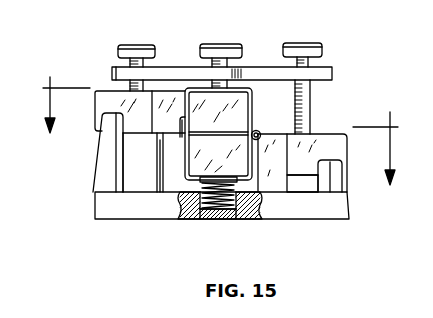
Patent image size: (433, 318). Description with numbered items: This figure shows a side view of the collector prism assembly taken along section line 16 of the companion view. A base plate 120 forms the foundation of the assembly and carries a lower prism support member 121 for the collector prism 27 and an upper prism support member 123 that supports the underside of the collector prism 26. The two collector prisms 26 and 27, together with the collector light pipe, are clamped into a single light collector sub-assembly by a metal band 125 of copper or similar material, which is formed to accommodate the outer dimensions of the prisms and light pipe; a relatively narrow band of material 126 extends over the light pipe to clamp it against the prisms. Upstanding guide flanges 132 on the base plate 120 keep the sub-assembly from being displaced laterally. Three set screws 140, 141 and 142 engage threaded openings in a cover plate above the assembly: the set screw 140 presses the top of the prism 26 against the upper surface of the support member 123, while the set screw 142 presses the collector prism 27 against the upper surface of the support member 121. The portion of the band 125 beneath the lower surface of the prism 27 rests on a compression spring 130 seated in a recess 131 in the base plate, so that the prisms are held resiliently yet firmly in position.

The section line 16- 16 is at (211, 147).
The collector prism 26 is at (100, 90).
The collector prism 27 is at (325, 134).
The base plate 120 is at (97, 207).
The lower prism support member 121 is at (290, 183).
The upper prism support member 123 is at (133, 183).
The metal band 125 is at (187, 90).
The narrow band of material 126 is at (258, 132).
The compression spring 130 is at (205, 210).
The recess 131 is at (230, 208).
The upstanding guide flange 132 is at (103, 175).
The set screw 140 is at (125, 44).
The set screw 141 is at (215, 43).
The set screw 142 is at (318, 43).